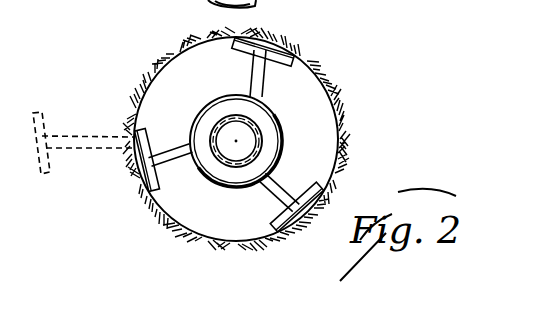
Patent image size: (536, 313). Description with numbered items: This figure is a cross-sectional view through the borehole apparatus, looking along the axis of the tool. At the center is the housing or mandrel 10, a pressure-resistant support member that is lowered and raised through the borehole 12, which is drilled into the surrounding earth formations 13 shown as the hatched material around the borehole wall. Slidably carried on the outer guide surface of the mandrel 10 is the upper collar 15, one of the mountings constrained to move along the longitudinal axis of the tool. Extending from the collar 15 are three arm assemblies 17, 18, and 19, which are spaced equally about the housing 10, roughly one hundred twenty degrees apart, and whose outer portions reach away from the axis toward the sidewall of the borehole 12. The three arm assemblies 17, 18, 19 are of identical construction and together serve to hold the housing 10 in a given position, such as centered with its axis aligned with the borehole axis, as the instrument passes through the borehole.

The housing or mandrel 10 is at (231, 171).
The borehole 12 is at (336, 97).
The earth formations 13 is at (368, 155).
The upper collar 15 is at (281, 136).
The arm assembly 17 is at (166, 147).
The arm assembly 18 is at (269, 81).
The arm assembly 19 is at (294, 183).